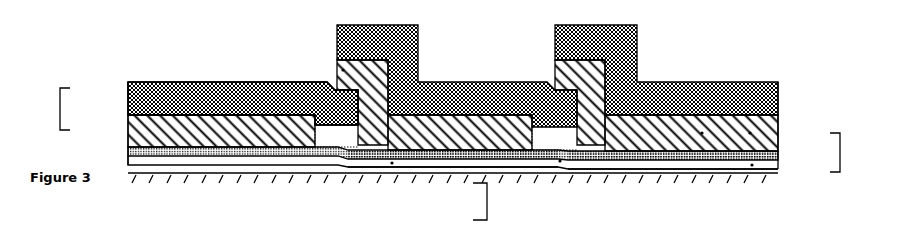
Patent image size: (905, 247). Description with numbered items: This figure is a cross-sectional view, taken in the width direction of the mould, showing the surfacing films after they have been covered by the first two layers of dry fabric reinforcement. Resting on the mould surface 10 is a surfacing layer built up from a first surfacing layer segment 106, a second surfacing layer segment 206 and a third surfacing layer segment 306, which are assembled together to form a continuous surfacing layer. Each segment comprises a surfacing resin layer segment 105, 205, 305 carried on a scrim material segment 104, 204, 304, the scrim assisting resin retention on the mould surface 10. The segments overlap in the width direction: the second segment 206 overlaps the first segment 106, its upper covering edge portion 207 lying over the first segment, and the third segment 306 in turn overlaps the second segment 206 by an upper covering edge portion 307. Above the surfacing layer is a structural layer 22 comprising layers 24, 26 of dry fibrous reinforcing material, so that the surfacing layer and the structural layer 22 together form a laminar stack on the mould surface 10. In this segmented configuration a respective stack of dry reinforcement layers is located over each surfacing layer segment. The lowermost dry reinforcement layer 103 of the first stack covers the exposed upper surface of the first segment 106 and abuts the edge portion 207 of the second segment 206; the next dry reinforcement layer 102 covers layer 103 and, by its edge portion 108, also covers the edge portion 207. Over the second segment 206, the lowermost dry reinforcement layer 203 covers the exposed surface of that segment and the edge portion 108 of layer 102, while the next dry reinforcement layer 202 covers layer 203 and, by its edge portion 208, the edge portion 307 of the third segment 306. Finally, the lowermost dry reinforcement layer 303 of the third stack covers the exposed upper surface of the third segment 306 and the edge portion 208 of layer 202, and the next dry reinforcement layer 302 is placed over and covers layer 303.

The mould surface 10 is at (773, 183).
The next dry reinforcement layer 102 is at (135, 82).
The lowermost dry reinforcement layer 103 is at (128, 112).
The scrim material segment 104 is at (128, 136).
The surfacing resin layer segment 105 is at (128, 148).
The first surfacing layer segment 106 is at (50, 109).
The edge portion of next dry reinforcement layer 108 is at (283, 82).
The next dry reinforcement layer 202 is at (336, 38).
The lowermost dry reinforcement layer 203 is at (342, 70).
The scrim material segment 204 is at (413, 158).
The surfacing resin layer segment 205 is at (392, 163).
The second surfacing layer segment 206 is at (497, 201).
The upper covering edge portion 207 is at (325, 140).
The edge portion 208 is at (523, 82).
The structural layer 22 is at (686, 76).
The layer of dry fibrous reinforcing material 24 is at (702, 133).
The layer of dry fibrous reinforcing material 26 is at (647, 80).
The next dry reinforcement layer 302 is at (763, 82).
The lowermost dry reinforcement layer 303 is at (750, 133).
The scrim material segment 304 is at (778, 145).
The surfacing resin layer segment 305 is at (752, 165).
The third surfacing layer segment 306 is at (852, 152).
The upper covering edge portion 307 is at (560, 161).